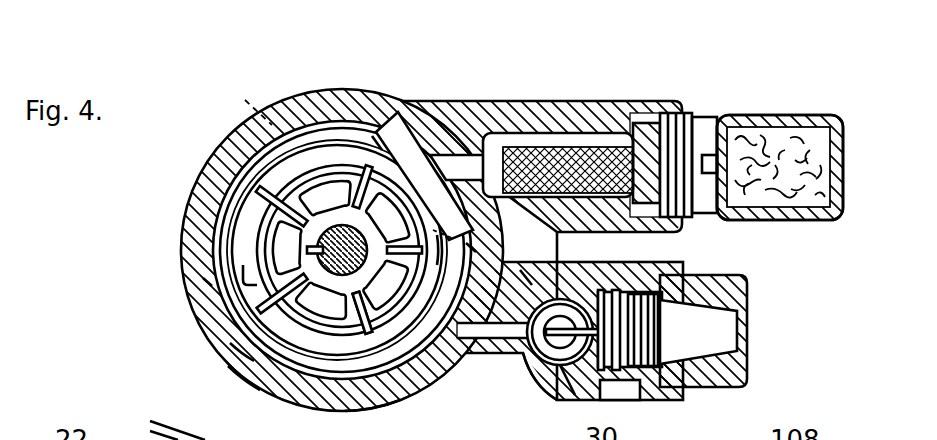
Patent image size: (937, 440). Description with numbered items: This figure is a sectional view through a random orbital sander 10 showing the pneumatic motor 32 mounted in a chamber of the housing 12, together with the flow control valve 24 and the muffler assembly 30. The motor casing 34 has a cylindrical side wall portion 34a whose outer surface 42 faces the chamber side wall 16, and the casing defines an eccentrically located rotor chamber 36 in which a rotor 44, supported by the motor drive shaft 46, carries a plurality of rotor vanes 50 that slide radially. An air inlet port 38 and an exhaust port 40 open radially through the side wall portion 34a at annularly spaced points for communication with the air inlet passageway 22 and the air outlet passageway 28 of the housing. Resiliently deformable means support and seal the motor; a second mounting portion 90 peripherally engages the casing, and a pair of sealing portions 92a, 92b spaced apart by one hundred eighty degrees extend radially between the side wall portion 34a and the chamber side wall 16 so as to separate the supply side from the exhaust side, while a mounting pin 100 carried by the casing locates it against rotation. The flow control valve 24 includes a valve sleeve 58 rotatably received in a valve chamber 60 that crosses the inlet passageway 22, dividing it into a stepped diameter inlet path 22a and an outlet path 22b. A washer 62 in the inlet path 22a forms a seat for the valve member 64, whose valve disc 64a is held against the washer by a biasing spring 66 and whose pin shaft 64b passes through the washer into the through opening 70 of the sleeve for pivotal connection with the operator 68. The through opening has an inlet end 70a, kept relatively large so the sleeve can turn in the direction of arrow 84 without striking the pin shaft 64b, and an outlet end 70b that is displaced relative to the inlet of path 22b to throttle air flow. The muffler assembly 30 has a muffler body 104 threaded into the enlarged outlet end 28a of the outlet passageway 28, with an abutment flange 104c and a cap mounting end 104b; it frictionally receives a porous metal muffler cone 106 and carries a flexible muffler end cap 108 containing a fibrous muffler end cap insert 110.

The sander 10 is at (168, 262).
The housing 12 is at (203, 151).
The chamber side wall 16 is at (332, 118).
The air inlet passageway 22 is at (749, 312).
The inlet path 22a is at (674, 330).
The outlet path 22b is at (358, 332).
The flow control valve 24 is at (500, 408).
The air outlet passageway 28 is at (462, 155).
The outlet end 28a is at (472, 160).
The muffler assembly 30 is at (724, 96).
The pneumatic motor 32 is at (303, 112).
The motor casing 34 is at (358, 116).
The side wall portion 34a is at (377, 142).
The rotor chamber 36 is at (200, 318).
The air inlet port 38 is at (367, 378).
The exhaust port 40 is at (246, 101).
The cylindrical outer surface 42 is at (215, 190).
The rotor 44 is at (235, 345).
The motor drive shaft 46 is at (265, 383).
The rotor vanes 50 is at (215, 333).
The valve sleeve 58 is at (538, 352).
The valve chamber 60 is at (537, 385).
The washer 62 is at (640, 262).
The valve member 64 is at (602, 262).
The valve disc 64a is at (640, 402).
The pin shaft 64b is at (535, 300).
The biasing spring 66 is at (652, 262).
The operator 68 is at (518, 270).
The through opening 70 is at (520, 390).
The inlet end 70a is at (575, 396).
The outlet end 70b is at (535, 325).
The arrow 84 is at (518, 287).
The second mounting portion 90 is at (203, 283).
The sealing portion 92a is at (228, 242).
The sealing portion 92b is at (476, 236).
The mounting pin 100 is at (458, 292).
The muffler body 104 is at (645, 113).
The muffler cap mounting end 104b is at (735, 118).
The annular abutment flange 104c is at (683, 115).
The muffler cone 106 is at (556, 148).
The muffler end cap 108 is at (822, 113).
The muffler end cap insert 110 is at (800, 218).